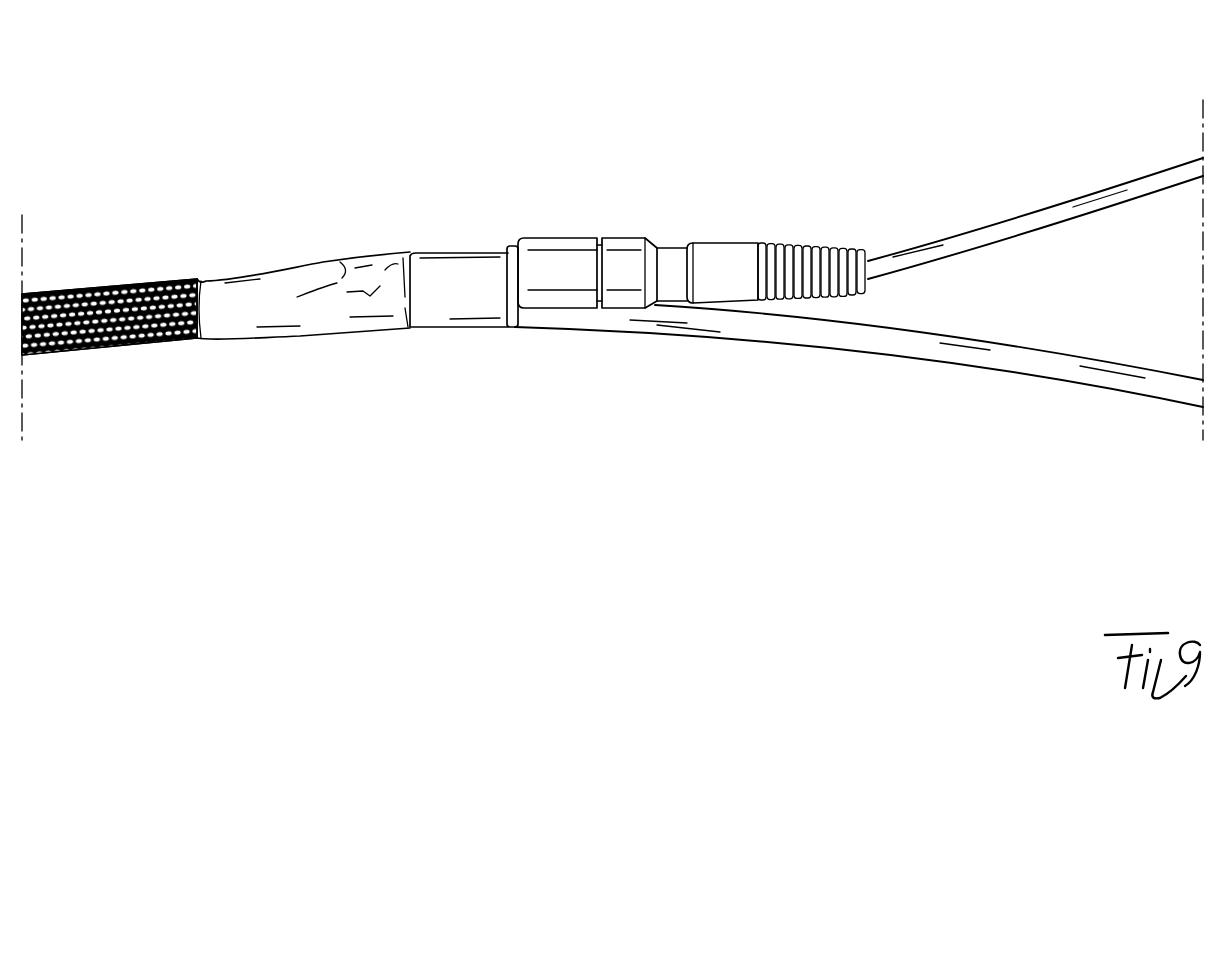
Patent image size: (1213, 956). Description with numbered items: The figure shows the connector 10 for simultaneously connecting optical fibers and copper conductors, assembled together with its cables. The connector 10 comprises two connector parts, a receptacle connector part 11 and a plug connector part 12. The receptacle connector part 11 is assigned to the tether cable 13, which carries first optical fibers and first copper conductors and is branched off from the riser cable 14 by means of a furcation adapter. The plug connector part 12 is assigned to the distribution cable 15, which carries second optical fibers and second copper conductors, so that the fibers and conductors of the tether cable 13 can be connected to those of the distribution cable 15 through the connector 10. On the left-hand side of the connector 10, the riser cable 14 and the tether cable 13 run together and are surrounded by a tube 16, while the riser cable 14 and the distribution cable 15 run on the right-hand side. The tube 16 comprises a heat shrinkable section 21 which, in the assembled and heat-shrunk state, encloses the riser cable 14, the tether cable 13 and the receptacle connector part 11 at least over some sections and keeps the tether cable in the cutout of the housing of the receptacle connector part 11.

The connector 10 is at (637, 186).
The receptacle connector part 11 is at (515, 103).
The plug connector part 12 is at (805, 130).
The tether cable 13 is at (137, 285).
The riser cable 14 is at (822, 322).
The distribution cable 15 is at (1010, 230).
The tube 16 is at (225, 495).
The heat shrinkable section 21 is at (327, 288).